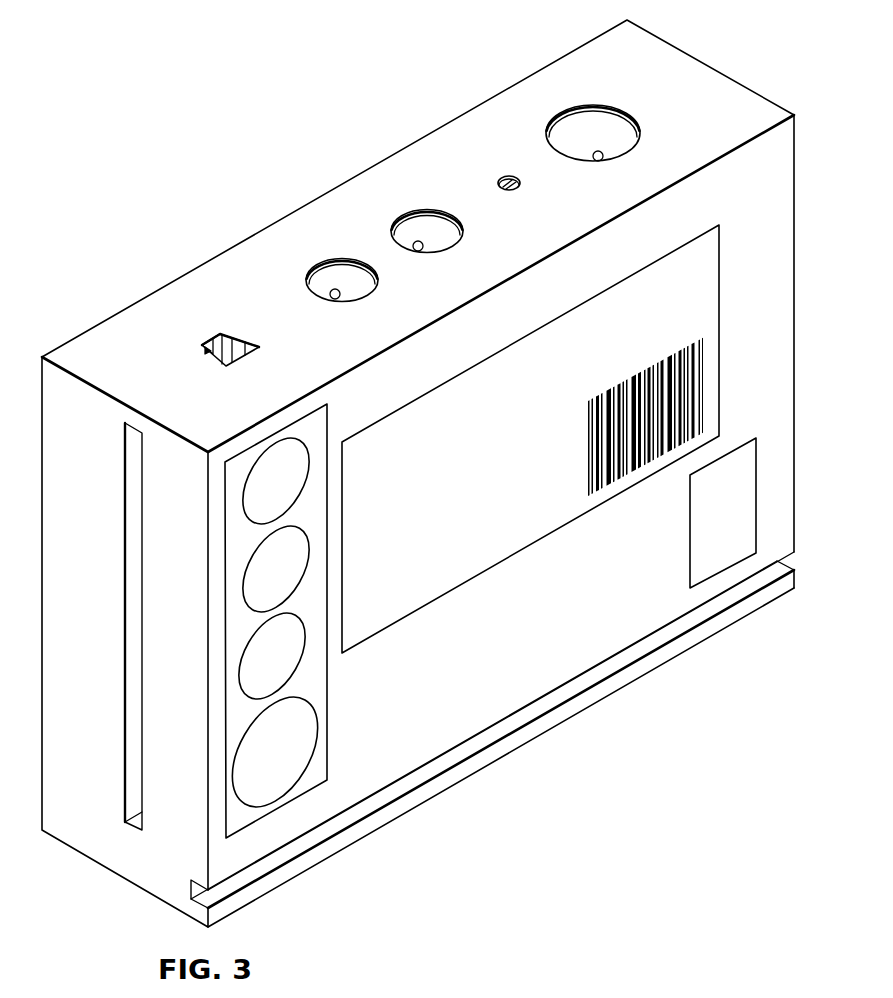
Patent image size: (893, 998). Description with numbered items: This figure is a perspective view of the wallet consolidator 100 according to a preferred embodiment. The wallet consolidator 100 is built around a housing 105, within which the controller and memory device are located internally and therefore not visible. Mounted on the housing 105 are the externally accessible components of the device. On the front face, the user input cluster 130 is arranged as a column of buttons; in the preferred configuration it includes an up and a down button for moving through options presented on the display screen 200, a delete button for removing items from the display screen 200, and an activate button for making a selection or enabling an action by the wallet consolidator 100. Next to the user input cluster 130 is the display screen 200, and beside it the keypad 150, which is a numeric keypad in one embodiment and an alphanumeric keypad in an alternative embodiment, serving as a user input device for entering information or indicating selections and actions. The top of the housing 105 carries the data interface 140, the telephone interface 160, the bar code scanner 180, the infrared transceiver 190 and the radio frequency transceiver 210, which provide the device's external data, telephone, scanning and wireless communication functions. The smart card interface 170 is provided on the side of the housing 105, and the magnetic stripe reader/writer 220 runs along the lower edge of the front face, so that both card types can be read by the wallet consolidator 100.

The wallet consolidator 100 is at (289, 137).
The housing 105 is at (698, 81).
The user input cluster 130 is at (320, 776).
The data interface 140 is at (598, 161).
The keypad 150 is at (700, 573).
The telephone interface 160 is at (250, 346).
The smart card interface 170 is at (130, 797).
The bar code scanner 180 is at (521, 187).
The infrared transceiver 190 is at (337, 299).
The display screen 200 is at (706, 284).
The radio frequency transceiver 210 is at (418, 251).
The magnetic stripe reader/writer 220 is at (321, 829).